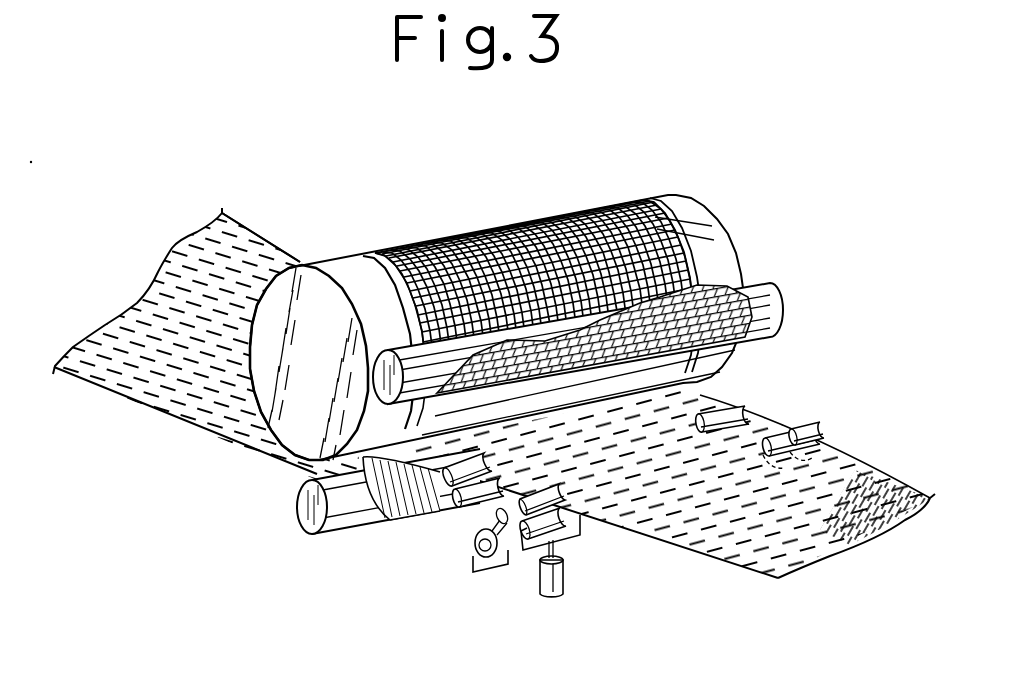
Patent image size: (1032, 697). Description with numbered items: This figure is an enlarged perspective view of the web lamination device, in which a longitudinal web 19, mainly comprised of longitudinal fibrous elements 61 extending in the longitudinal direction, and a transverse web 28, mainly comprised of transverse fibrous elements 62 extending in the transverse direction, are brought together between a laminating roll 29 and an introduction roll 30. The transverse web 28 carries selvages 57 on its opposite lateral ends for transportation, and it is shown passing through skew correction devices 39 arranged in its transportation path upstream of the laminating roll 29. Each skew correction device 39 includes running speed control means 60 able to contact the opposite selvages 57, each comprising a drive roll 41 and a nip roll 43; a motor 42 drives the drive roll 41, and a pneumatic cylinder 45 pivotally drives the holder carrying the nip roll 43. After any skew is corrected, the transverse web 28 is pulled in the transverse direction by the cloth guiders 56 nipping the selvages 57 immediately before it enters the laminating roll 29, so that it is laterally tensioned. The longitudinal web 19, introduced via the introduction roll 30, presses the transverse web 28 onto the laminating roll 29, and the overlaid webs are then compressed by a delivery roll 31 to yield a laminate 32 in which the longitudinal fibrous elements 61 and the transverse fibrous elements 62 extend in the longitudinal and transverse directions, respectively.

The longitudinal web 19 is at (173, 418).
The longitudinal fibrous elements 61 is at (158, 343).
The laminating roll 29 is at (717, 240).
The delivery roll 31 is at (757, 285).
The laminate 32 is at (728, 284).
The introduction roll 30 is at (300, 497).
The transverse web 28 is at (742, 578).
The selvages 57 is at (717, 548).
The transverse fibrous elements 62 is at (813, 537).
The cloth guiders 56 is at (447, 490).
The drive roll 41 is at (478, 507).
The nip roll 43 is at (557, 535).
The motor 42 is at (473, 557).
The pneumatic cylinder 45 is at (548, 598).
The running speed control means 60 is at (516, 552).
The skew correction devices 39 is at (584, 594).